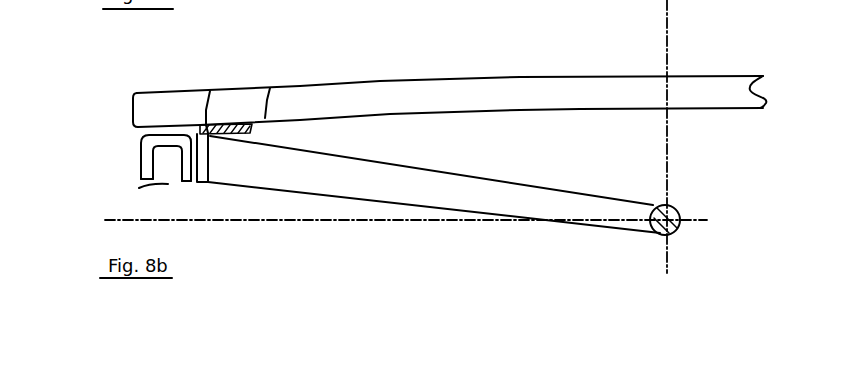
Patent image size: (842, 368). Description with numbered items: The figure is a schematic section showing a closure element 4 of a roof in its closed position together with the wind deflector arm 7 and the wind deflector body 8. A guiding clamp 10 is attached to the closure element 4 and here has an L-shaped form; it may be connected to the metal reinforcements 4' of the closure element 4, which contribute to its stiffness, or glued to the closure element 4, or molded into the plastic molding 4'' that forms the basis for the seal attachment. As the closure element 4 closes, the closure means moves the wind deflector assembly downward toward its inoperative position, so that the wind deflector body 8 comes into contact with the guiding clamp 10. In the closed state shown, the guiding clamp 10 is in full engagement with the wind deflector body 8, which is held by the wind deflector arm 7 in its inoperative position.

The closure element 4 is at (449, 63).
The metal reinforcements 4' is at (226, 91).
The plastic molding 4'' is at (292, 59).
The wind deflector arm 7 is at (295, 176).
The wind deflector body 8 is at (143, 150).
The guiding clamp 10 is at (167, 186).